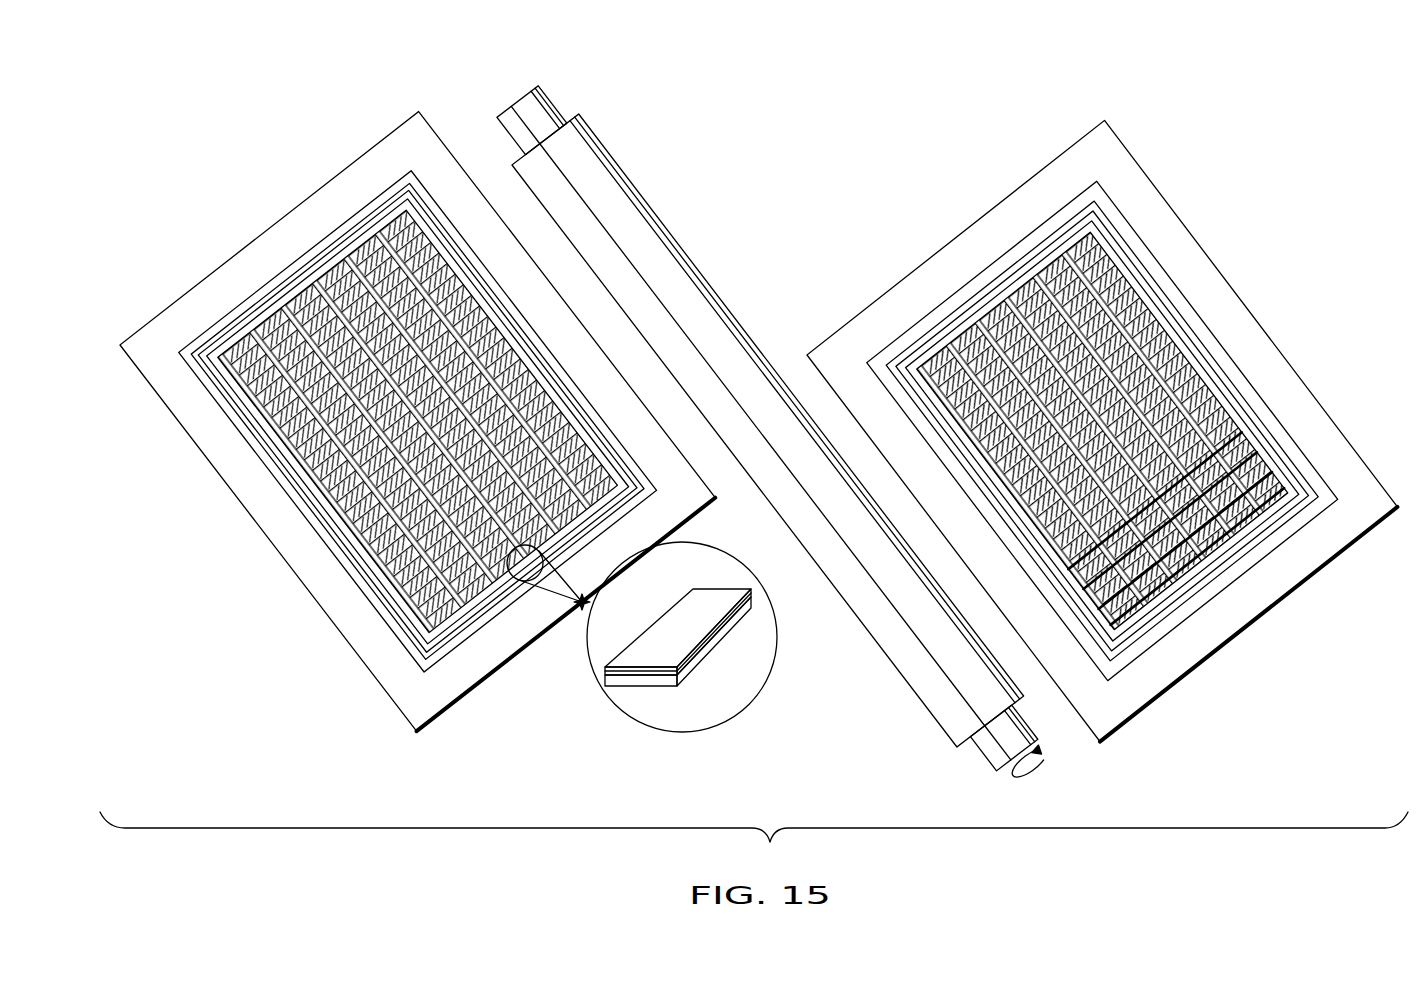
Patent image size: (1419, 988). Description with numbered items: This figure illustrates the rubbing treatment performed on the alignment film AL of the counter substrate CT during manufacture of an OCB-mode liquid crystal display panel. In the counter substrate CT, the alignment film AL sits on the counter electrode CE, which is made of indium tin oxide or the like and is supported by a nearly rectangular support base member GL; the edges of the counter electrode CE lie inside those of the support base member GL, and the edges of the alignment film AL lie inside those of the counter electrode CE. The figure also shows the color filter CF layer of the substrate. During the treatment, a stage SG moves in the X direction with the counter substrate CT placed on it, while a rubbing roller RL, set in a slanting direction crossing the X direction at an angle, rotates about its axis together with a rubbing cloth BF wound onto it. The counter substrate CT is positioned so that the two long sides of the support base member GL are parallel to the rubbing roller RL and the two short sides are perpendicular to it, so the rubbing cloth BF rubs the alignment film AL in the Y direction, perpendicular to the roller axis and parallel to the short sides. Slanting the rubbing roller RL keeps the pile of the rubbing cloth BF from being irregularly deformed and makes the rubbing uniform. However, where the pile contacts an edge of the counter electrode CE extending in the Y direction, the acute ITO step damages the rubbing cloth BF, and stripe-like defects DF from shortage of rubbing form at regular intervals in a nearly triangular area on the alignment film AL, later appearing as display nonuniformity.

The counter substrate CT is at (447, 108).
The stage SG is at (350, 163).
The alignment film AL is at (330, 240).
The counter electrode CE is at (270, 295).
The color filter CF is at (540, 381).
The support base member GL is at (310, 520).
The stripe-like defects DF is at (1237, 560).
The rubbing cloth BF is at (903, 667).
The rubbing roller RL is at (1057, 768).
The X direction X is at (735, 142).
The Y direction Y is at (698, 527).